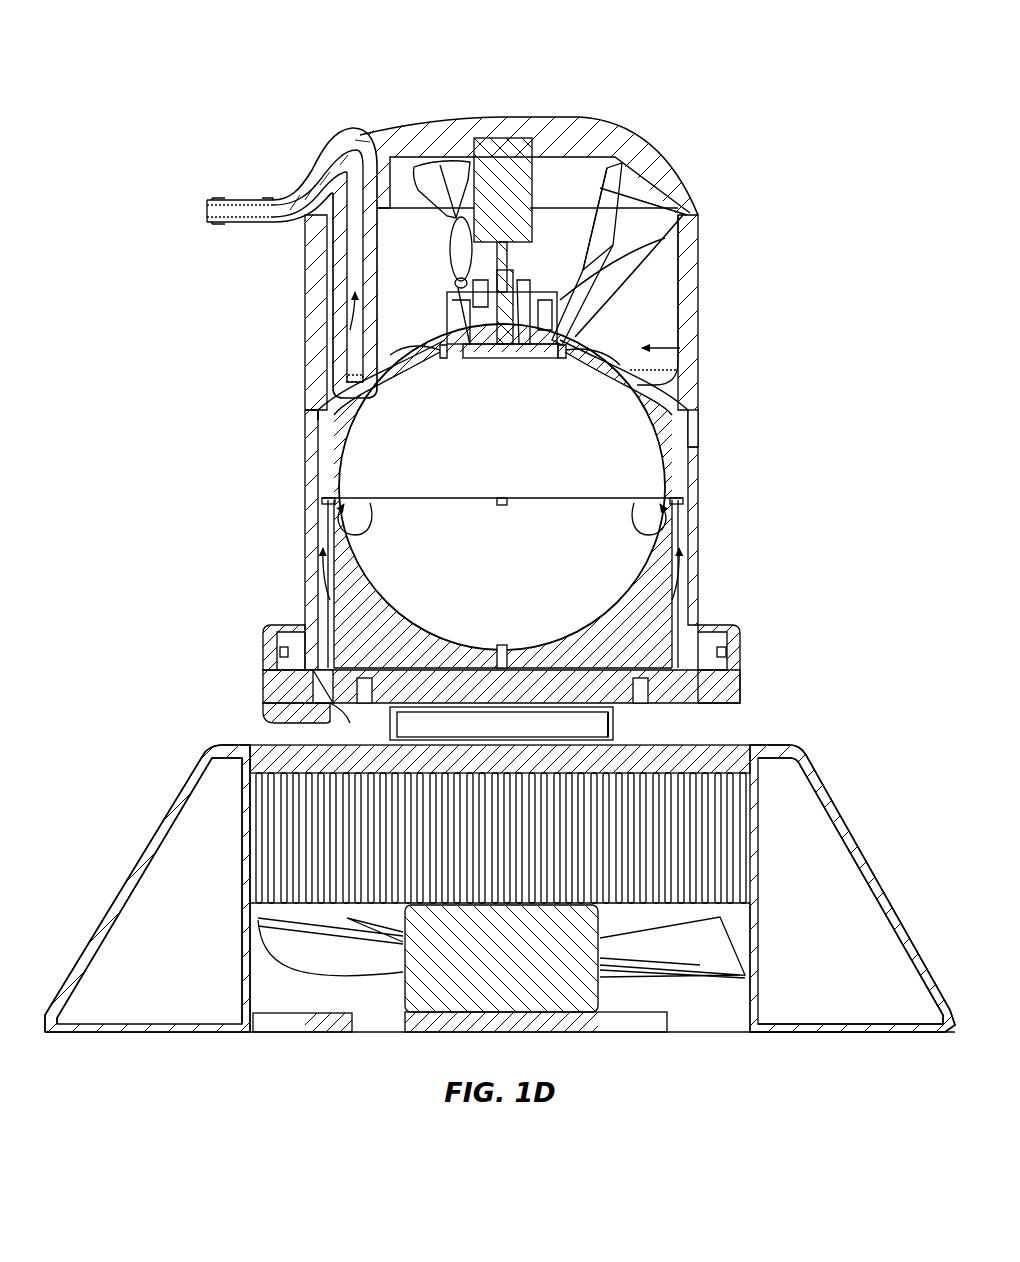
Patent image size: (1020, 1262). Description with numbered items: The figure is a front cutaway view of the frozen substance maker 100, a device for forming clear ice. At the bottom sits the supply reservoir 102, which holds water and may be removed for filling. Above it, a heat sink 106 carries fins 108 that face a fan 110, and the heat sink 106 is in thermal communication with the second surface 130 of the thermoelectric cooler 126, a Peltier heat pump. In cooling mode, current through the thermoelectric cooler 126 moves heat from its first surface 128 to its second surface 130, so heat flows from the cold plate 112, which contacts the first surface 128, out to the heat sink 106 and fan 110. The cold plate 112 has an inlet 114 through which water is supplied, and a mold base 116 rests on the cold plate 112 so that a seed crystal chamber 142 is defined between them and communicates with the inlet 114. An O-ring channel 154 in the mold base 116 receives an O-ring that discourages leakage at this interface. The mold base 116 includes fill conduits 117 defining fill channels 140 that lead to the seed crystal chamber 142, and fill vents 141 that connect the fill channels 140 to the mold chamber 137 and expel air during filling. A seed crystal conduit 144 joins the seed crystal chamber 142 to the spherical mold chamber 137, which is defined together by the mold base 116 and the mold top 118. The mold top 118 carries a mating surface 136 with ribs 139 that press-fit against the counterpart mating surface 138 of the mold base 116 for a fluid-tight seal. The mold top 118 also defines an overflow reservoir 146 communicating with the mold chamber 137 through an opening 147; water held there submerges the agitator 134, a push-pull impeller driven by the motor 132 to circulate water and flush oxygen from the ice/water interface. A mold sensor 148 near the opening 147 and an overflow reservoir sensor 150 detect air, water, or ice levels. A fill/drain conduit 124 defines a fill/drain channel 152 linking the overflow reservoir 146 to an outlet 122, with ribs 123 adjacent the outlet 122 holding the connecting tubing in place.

The frozen substance maker 100 is at (850, 58).
The supply reservoir 102 is at (862, 842).
The heat sink 106 is at (280, 745).
The fins 108 is at (271, 764).
The fan 110 is at (590, 1034).
The cold plate 112 is at (265, 630).
The inlet 114 is at (284, 690).
The mold base 116 is at (692, 447).
The fill conduits 117 is at (310, 565).
The mold top 118 is at (697, 367).
The outlet 122 is at (203, 211).
The ribs 123 is at (268, 196).
The fill/drain conduit 124 is at (338, 122).
The thermoelectric cooler 126 is at (614, 720).
The first surface 128 is at (392, 708).
The second surface 130 is at (614, 740).
The motor 132 is at (534, 172).
The agitator 134 is at (692, 212).
The mating surface 136 is at (308, 420).
The mold chamber 137 is at (540, 470).
The counterpart mating surface 138 is at (306, 410).
The ribs 139 is at (700, 432).
The fill channels 140 is at (308, 600).
The fill vents 141 is at (333, 512).
The seed crystal chamber 142 is at (606, 664).
The seed crystal conduit 144 is at (500, 644).
The overflow reservoir 146 is at (680, 345).
The opening 147 is at (455, 362).
The mold sensor 148 is at (682, 255).
The overflow reservoir sensor 150 is at (458, 262).
The fill/drain channel 152 is at (347, 347).
The O-ring channel 154 is at (278, 651).